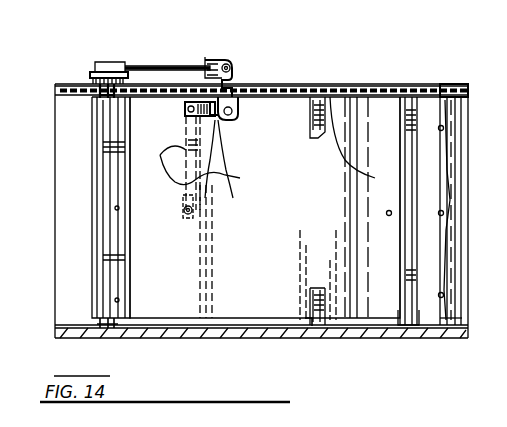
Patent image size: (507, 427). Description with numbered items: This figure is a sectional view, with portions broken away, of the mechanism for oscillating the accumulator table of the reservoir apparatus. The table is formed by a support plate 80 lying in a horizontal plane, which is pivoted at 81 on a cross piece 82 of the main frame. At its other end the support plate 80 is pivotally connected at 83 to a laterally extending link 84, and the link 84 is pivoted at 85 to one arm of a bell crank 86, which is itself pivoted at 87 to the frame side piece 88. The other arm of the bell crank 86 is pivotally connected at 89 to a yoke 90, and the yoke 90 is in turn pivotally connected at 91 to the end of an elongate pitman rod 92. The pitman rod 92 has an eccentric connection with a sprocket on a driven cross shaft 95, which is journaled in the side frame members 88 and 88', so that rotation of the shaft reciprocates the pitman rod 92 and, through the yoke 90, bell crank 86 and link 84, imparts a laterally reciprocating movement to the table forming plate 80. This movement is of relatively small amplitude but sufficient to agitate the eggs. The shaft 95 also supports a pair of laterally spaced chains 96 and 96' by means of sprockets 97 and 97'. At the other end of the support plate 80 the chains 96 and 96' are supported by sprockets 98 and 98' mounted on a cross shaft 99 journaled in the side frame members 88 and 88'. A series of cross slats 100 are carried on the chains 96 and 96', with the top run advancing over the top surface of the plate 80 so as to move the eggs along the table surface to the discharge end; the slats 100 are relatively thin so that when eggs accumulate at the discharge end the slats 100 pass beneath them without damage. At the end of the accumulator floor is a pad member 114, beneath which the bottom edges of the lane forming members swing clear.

The support plate 80 is at (376, 110).
The pivot 81 is at (386, 212).
The cross piece 82 is at (402, 100).
The pivotal connection 83 is at (193, 210).
The link 84 is at (226, 176).
The pivot 85 is at (185, 110).
The bell crank 86 is at (220, 130).
The pivot 87 is at (238, 110).
The frame side piece 88 is at (261, 78).
The side frame member 88' is at (261, 346).
The pivotal connection 89 is at (231, 66).
The yoke 90 is at (226, 66).
The pivotal connection 91 is at (215, 58).
The pitman rod 92 is at (148, 66).
The driven cross shaft 95 is at (97, 162).
The chain 96 is at (337, 95).
The chain 96' is at (338, 330).
The sprocket 97 is at (94, 69).
The sprocket 97' is at (88, 341).
The sprocket 98 is at (461, 189).
The sprocket 98' is at (461, 341).
The cross shaft 99 is at (460, 160).
The cross slats 100 is at (406, 325).
The pad member 114 is at (97, 200).